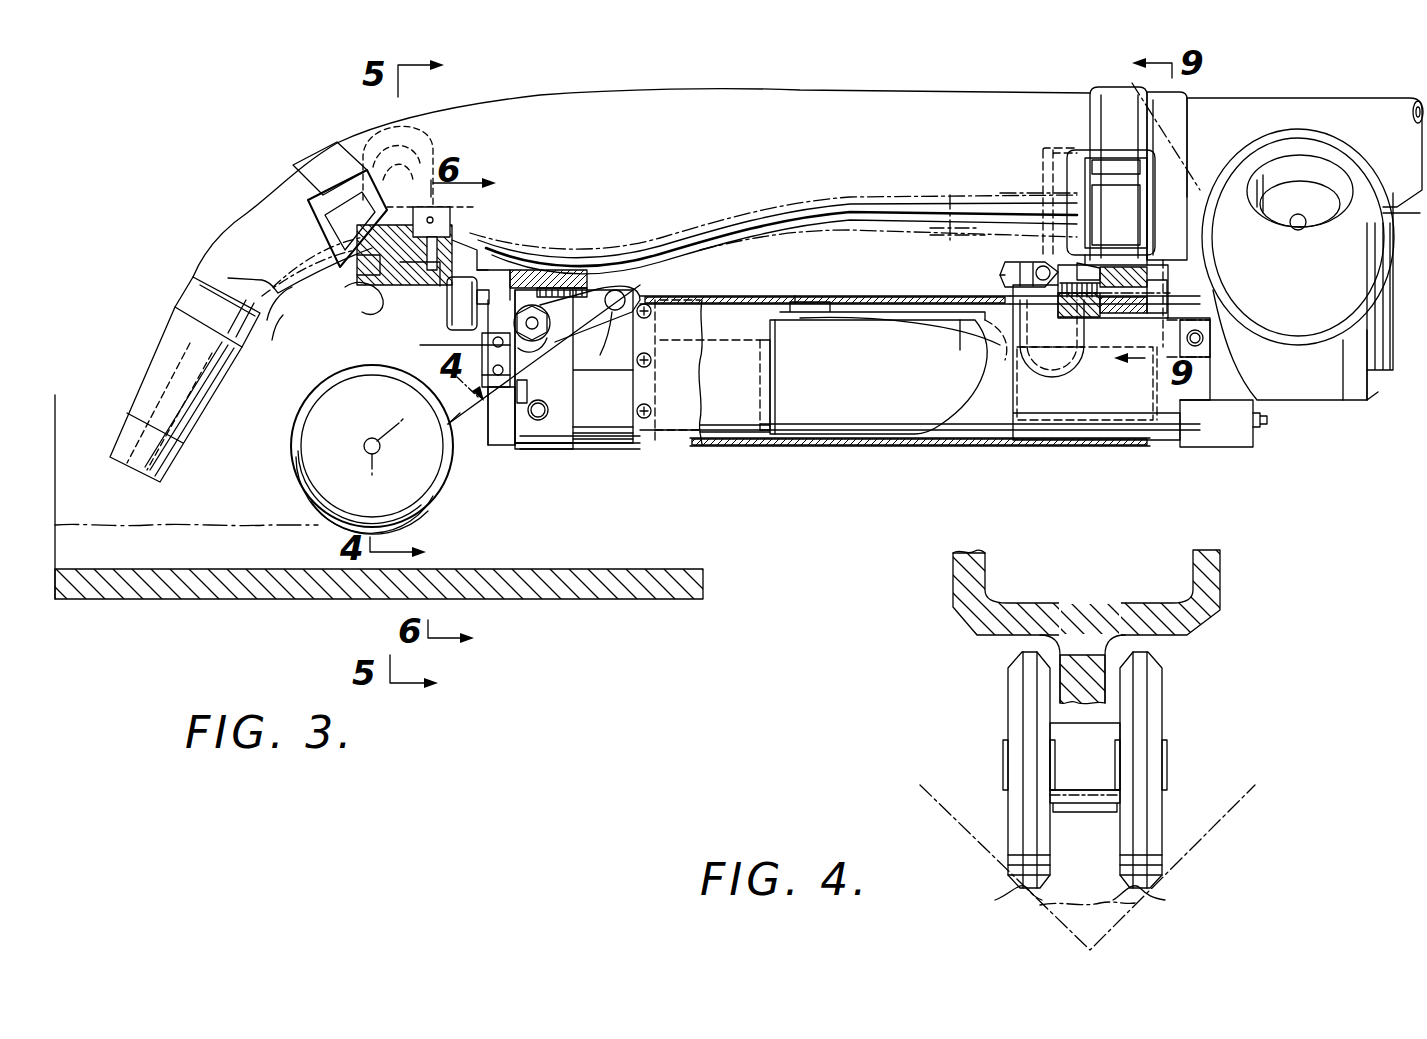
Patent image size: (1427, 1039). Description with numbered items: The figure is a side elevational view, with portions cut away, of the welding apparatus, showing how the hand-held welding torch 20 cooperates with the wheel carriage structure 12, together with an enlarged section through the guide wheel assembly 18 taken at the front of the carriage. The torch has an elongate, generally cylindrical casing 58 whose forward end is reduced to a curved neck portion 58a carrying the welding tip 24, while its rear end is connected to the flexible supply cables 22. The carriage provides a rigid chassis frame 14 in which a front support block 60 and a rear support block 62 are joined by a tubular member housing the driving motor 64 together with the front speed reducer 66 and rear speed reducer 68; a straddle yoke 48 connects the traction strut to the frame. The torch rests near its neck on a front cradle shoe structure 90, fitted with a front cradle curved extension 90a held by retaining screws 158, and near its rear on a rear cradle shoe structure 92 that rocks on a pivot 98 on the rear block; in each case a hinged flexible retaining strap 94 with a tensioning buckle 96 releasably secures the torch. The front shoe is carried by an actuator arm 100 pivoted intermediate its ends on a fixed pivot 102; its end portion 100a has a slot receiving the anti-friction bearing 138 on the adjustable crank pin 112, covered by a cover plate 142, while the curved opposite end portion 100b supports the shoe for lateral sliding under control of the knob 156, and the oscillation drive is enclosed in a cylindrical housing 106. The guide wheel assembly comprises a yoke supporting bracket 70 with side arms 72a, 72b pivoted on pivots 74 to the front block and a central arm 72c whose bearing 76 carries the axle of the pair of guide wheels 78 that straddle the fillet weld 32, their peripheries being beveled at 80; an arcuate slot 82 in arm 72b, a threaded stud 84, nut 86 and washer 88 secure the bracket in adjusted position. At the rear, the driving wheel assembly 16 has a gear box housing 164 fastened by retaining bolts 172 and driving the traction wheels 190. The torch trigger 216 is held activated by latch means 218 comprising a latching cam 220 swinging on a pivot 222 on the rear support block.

In FIG. 3, the wheel carriage structure 12 is at (895, 455).
In FIG. 3, the chassis frame 14 is at (842, 455).
In FIG. 3, the driving wheel assembly 16 is at (1383, 280).
In FIG. 3, the guide wheel assembly 18 is at (284, 492).
In FIG. 4, the guide wheel assembly 18 is at (996, 718).
In FIG. 3, the welding torch 20 is at (655, 92).
In FIG. 3, the flexible supply cables 22 is at (1366, 114).
In FIG. 3, the welding tip 24 is at (165, 352).
In FIG. 3, the fillet weld 32 is at (172, 590).
In FIG. 4, the fillet weld 32 is at (1075, 925).
In FIG. 3, the straddle yoke 48 is at (1197, 167).
In FIG. 3, the elongate casing 58 is at (718, 172).
In FIG. 3, the curved neck portion 58a is at (250, 230).
In FIG. 3, the front support block 60 is at (605, 445).
In FIG. 3, the rear support block 62 is at (1052, 442).
In FIG. 3, the driving motor 64 is at (880, 389).
In FIG. 3, the front speed reducer 66 is at (732, 393).
In FIG. 3, the rear speed reducer 68 is at (1100, 435).
In FIG. 4, the yoke supporting bracket 70 is at (1092, 612).
In FIG. 4, the side arm 72a is at (958, 585).
In FIG. 3, the side arm 72b is at (576, 366).
In FIG. 4, the side arm 72b is at (1212, 577).
In FIG. 4, the central arm 72c is at (1107, 650).
In FIG. 3, the pivot 74 is at (627, 303).
In FIG. 4, the bearing 76 is at (1090, 814).
In FIG. 3, the guide wheels 78 is at (322, 438).
In FIG. 4, the guide wheels 78 is at (1008, 683).
In FIG. 3, the beveled edge margins 80 is at (412, 515).
In FIG. 4, the beveled edge margins 80 is at (1030, 885).
In FIG. 3, the arcuate slot 82 is at (548, 345).
In FIG. 3, the threaded stud 84 is at (548, 325).
In FIG. 3, the nut 86 is at (572, 268).
In FIG. 3, the washer 88 is at (600, 350).
In FIG. 3, the front cradle shoe structure 90 is at (448, 222).
In FIG. 3, the front cradle curved extension 90a is at (292, 315).
In FIG. 3, the rear cradle shoe structure 92 is at (1162, 190).
In FIG. 3, the retaining strap 94 is at (317, 163).
In FIG. 3, the tensioning buckle 96 is at (337, 275).
In FIG. 3, the pivot 98 is at (1160, 288).
In FIG. 3, the actuator arm 100 is at (500, 270).
In FIG. 3, the actuator arm end portion 100a is at (492, 448).
In FIG. 3, the actuator arm end portion 100b is at (470, 255).
In FIG. 3, the fixed pivot 102 is at (450, 298).
In FIG. 3, the cylindrical housing 106 is at (560, 452).
In FIG. 3, the crank pin 112 is at (480, 358).
In FIG. 3, the anti-friction bearing 138 is at (478, 342).
In FIG. 3, the cover plate 142 is at (482, 448).
In FIG. 3, the knob 156 is at (445, 132).
In FIG. 3, the retaining screws 158 is at (358, 285).
In FIG. 3, the gear box housing 164 is at (1360, 400).
In FIG. 3, the retaining bolts 172 is at (1270, 420).
In FIG. 3, the traction wheels 190 is at (1312, 332).
In FIG. 3, the trigger 216 is at (962, 232).
In FIG. 3, the latch means 218 is at (990, 286).
In FIG. 3, the latching cam 220 is at (1015, 262).
In FIG. 3, the pivot 222 is at (1050, 287).